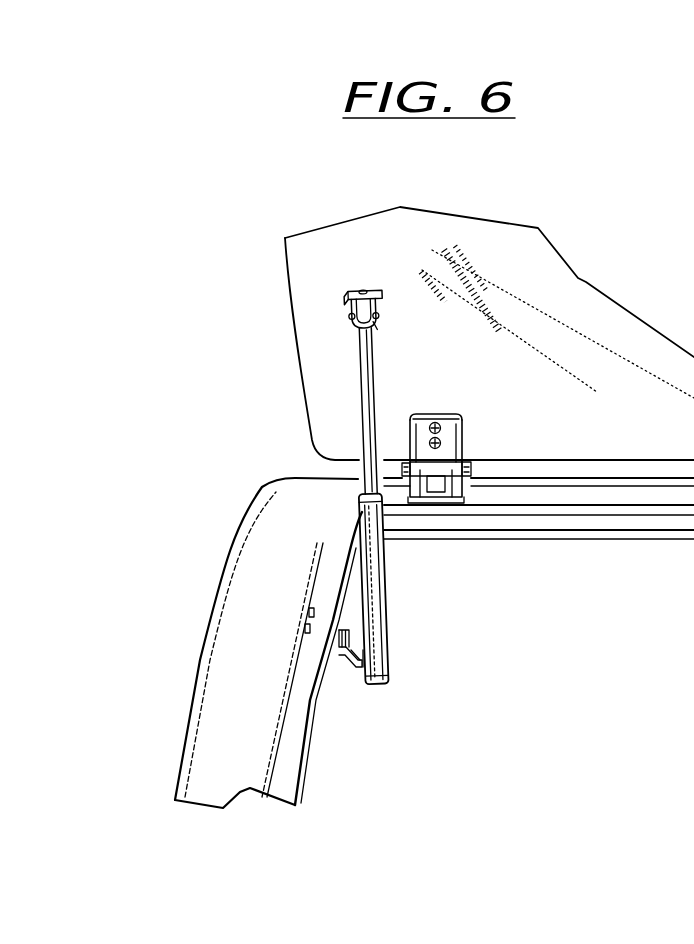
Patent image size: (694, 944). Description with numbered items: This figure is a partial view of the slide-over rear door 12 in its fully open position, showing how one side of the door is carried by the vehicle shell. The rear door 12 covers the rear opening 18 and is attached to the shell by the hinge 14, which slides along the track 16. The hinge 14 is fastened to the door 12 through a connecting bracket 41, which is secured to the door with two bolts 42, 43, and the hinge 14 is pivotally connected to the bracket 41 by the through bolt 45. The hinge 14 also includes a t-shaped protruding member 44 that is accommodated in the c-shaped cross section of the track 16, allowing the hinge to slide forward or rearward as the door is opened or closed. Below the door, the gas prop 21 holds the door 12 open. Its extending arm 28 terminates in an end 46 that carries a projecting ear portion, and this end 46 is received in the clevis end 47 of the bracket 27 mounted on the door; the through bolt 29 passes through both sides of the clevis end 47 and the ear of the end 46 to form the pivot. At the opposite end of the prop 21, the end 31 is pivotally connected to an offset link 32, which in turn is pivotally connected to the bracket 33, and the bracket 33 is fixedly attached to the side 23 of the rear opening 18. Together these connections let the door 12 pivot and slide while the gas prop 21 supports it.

The rear door 12 is at (537, 274).
The hinge 14 is at (451, 451).
The track 16 is at (467, 490).
The rear opening 18 is at (447, 796).
The gas prop 21 is at (387, 582).
The side of the rear opening 23 is at (270, 608).
The bracket 27 is at (350, 292).
The extending arm 28 is at (372, 377).
The through bolt 29 is at (379, 316).
The end of the prop 31 is at (380, 686).
The offset link 32 is at (356, 665).
The bracket 33 is at (335, 666).
The connecting bracket 41 is at (420, 412).
The bolt 42 is at (440, 426).
The bolt 43 is at (442, 440).
The t-shaped protruding member 44 is at (436, 484).
The through bolt 45 is at (471, 470).
The end of the arm 46 is at (352, 318).
The clevis end 47 is at (375, 329).